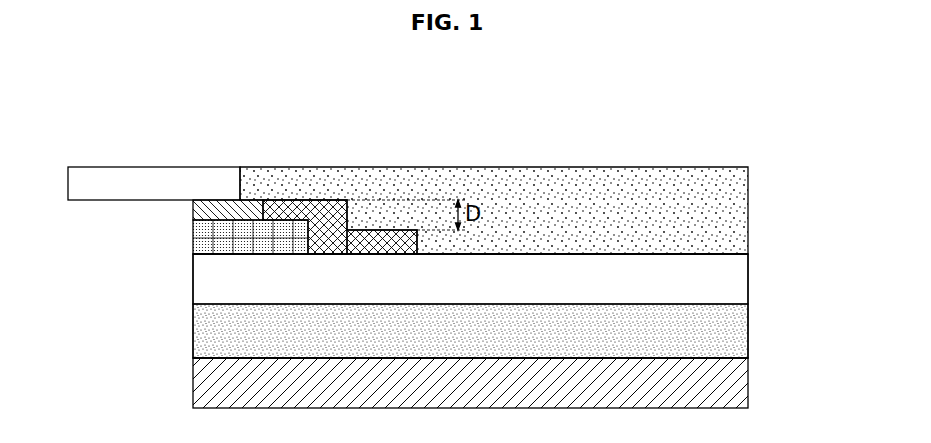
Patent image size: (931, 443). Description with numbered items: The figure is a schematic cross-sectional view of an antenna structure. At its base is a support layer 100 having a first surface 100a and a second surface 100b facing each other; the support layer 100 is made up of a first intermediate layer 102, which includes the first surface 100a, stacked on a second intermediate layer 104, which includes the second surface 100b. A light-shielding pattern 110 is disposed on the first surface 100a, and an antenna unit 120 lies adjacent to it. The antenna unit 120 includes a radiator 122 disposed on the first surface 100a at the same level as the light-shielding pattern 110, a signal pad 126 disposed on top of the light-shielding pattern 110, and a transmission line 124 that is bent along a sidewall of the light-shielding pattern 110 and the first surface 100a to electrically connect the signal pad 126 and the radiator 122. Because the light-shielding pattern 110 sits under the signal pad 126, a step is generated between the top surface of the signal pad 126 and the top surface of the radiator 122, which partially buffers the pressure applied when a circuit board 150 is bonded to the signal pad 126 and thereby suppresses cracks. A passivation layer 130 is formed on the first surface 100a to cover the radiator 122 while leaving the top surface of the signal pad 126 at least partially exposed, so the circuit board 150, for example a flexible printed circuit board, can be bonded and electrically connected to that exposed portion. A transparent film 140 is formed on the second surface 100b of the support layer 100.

The support layer 100 is at (103, 266).
The first surface 100a is at (693, 254).
The second surface 100b is at (695, 358).
The first intermediate layer 102 is at (193, 282).
The second intermediate layer 104 is at (193, 335).
The light-shielding pattern 110 is at (193, 244).
The antenna unit 120 is at (423, 93).
The radiator 122 is at (410, 231).
The transmission line 124 is at (333, 199).
The signal pad 126 is at (253, 195).
The passivation layer 130 is at (746, 180).
The transparent film 140 is at (193, 387).
The circuit board 150 is at (159, 181).